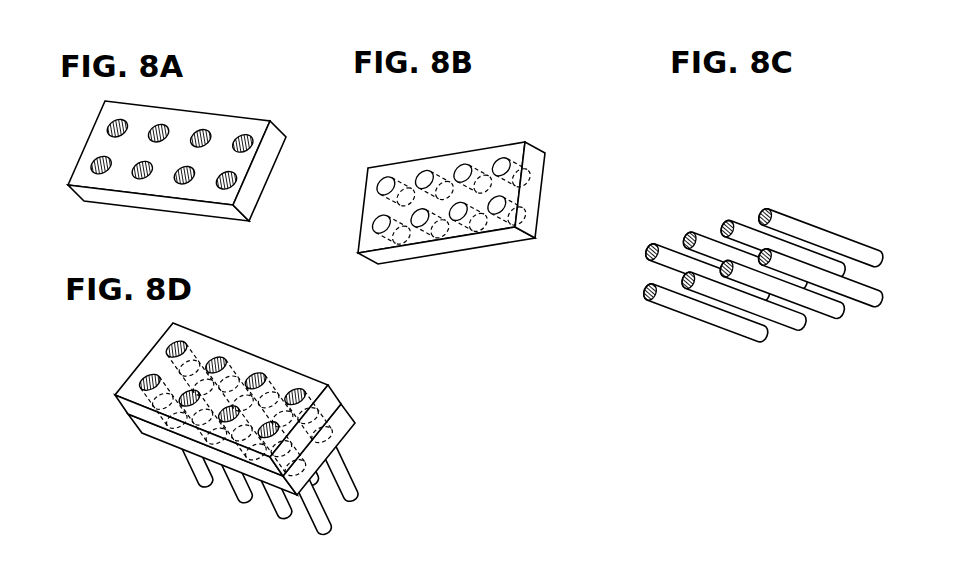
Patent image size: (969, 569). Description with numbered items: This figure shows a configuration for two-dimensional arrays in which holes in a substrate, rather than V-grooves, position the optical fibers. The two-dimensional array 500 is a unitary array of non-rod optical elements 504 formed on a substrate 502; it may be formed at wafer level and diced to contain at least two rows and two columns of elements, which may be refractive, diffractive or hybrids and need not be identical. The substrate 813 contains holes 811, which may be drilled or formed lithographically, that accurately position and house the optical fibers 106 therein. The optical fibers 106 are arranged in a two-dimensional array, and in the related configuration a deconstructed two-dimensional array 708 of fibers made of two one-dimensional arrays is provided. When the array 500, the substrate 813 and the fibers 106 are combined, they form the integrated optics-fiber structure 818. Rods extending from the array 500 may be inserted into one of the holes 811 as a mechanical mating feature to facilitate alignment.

In FIG. 8A, the two-dimensional array 500 is at (213, 141).
In FIG. 8D, the two-dimensional array 500 is at (271, 355).
In FIG. 8A, the substrate 502 is at (282, 151).
In FIG. 8A, the non-rod optical elements 504 is at (122, 125).
In FIG. 8B, the substrate 813 is at (464, 181).
In FIG. 8B, the holes 811 is at (506, 162).
In FIG. 8C, the optical fibers 106 is at (667, 306).
In FIG. 8D, the integrated optics-fiber structure 818 is at (123, 355).
In FIG. 8D, the deconstructed two-dimensional array 708 is at (349, 405).